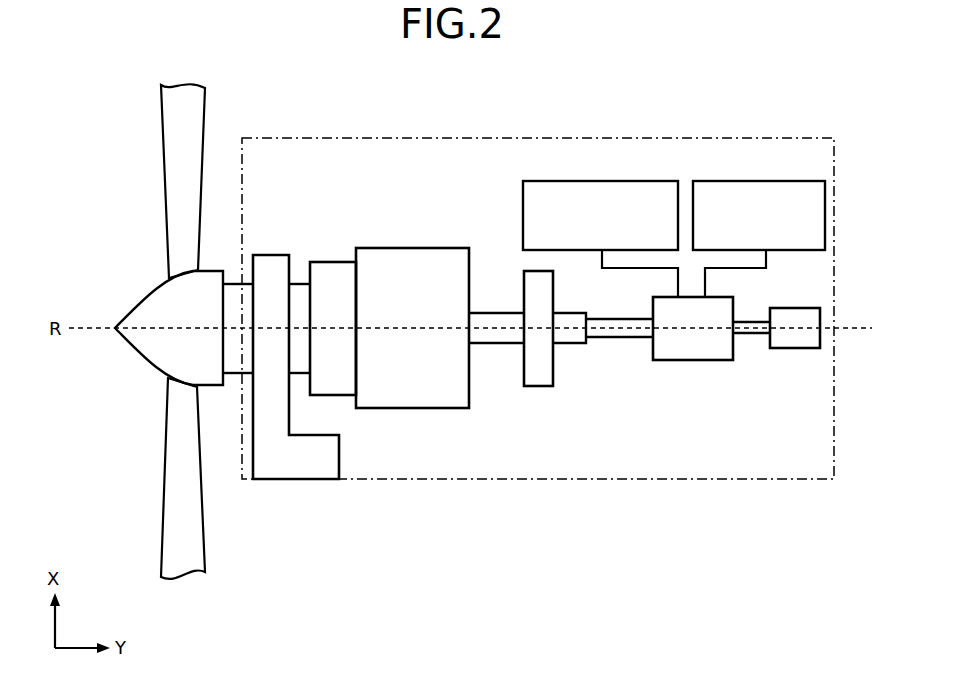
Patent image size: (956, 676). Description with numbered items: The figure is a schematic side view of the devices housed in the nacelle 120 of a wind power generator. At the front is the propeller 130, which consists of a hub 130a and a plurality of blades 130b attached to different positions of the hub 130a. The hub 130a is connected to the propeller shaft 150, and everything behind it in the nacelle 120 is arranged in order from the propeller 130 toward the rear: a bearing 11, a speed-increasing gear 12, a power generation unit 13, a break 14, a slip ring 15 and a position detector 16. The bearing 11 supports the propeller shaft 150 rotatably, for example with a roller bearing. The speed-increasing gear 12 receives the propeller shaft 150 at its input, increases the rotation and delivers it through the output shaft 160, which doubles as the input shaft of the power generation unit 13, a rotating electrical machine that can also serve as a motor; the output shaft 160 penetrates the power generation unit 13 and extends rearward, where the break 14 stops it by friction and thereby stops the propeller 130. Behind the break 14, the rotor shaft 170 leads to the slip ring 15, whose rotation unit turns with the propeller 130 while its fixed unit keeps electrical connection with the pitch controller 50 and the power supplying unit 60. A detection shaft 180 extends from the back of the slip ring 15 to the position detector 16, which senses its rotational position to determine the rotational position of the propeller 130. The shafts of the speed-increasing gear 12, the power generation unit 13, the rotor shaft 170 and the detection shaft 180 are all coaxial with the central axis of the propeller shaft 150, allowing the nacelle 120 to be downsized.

The propeller 130 is at (129, 331).
The hub 130a is at (153, 290).
The blade 130b is at (168, 210).
The propeller shaft 150 is at (233, 375).
The bearing 11 is at (297, 480).
The speed-increasing gear 12 is at (328, 260).
The power generation unit 13 is at (410, 247).
The output shaft 160 is at (498, 344).
The break 14 is at (554, 282).
The rotor shaft 170 is at (618, 338).
The slip ring 15 is at (695, 361).
The detection shaft 180 is at (752, 334).
The position detector 16 is at (797, 349).
The pitch controller 50 is at (596, 180).
The power supplying unit 60 is at (760, 180).
The nacelle 120 is at (547, 137).